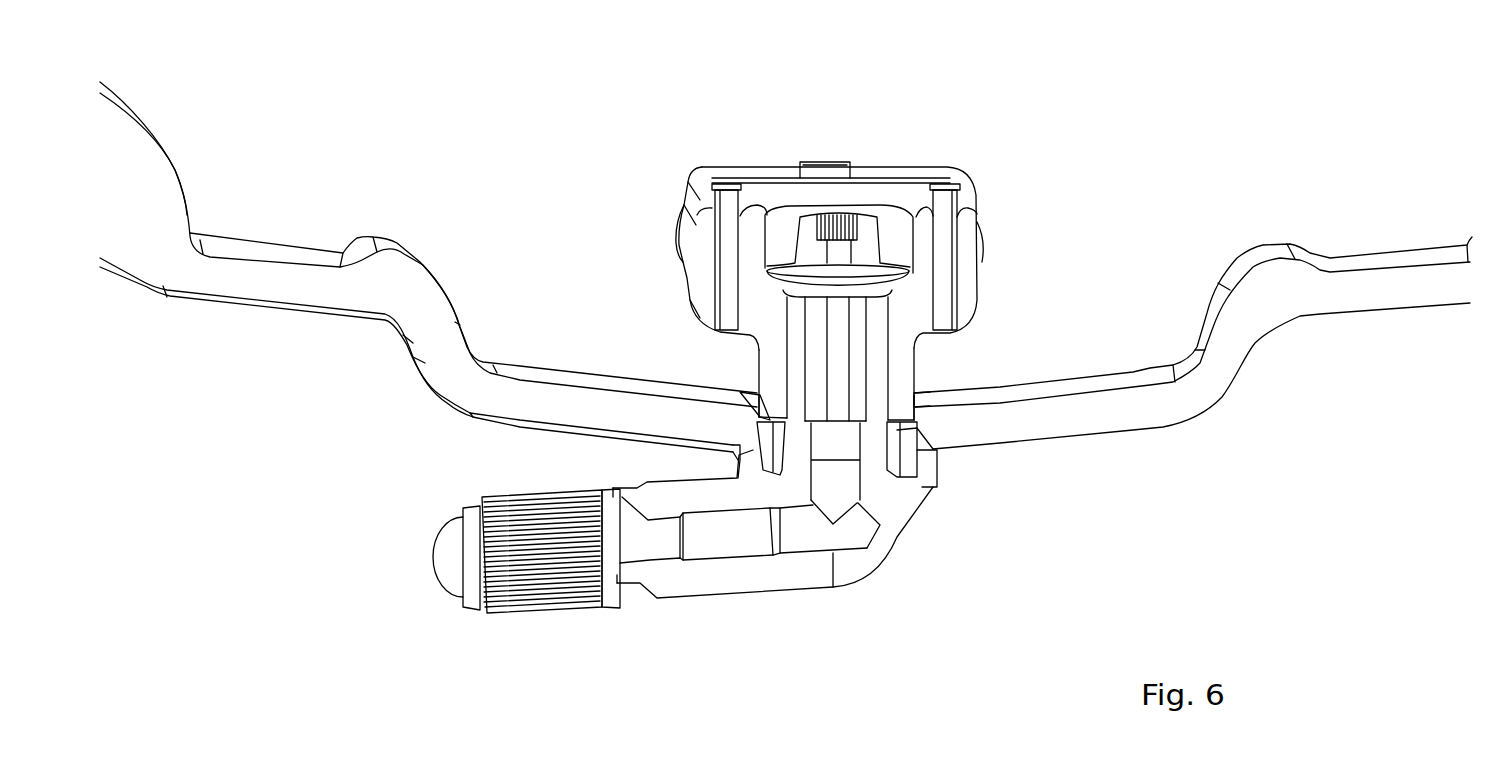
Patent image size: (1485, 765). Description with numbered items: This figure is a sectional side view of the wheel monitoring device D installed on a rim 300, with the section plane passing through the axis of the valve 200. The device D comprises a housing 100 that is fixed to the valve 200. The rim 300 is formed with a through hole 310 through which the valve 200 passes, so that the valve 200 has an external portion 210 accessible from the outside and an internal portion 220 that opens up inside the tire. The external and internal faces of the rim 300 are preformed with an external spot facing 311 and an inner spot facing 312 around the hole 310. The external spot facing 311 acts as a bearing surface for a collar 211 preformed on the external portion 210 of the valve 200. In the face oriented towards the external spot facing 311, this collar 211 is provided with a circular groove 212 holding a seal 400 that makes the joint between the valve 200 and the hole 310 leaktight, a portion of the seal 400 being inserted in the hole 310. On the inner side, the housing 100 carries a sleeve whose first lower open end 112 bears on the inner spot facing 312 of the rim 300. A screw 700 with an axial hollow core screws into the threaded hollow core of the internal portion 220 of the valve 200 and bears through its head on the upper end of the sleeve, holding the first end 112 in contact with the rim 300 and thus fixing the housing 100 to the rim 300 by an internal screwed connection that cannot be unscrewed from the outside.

The housing 100 is at (950, 185).
The first lower open end 112 is at (900, 417).
The valve 200 is at (917, 587).
The external portion 210 is at (790, 580).
The collar 211 is at (930, 455).
The circular groove 212 is at (915, 467).
The internal portion 220 is at (877, 347).
The rim 300 is at (1145, 380).
The through hole 310 is at (900, 431).
The external spot facing 311 is at (735, 448).
The inner spot facing 312 is at (762, 417).
The seal 400 is at (897, 455).
The screw 700 is at (806, 248).
The wheel monitoring device D is at (936, 132).